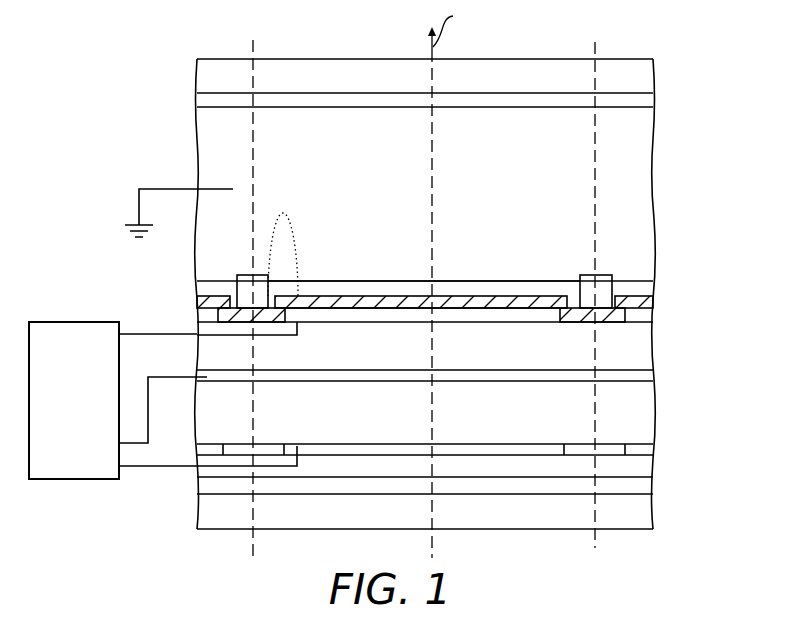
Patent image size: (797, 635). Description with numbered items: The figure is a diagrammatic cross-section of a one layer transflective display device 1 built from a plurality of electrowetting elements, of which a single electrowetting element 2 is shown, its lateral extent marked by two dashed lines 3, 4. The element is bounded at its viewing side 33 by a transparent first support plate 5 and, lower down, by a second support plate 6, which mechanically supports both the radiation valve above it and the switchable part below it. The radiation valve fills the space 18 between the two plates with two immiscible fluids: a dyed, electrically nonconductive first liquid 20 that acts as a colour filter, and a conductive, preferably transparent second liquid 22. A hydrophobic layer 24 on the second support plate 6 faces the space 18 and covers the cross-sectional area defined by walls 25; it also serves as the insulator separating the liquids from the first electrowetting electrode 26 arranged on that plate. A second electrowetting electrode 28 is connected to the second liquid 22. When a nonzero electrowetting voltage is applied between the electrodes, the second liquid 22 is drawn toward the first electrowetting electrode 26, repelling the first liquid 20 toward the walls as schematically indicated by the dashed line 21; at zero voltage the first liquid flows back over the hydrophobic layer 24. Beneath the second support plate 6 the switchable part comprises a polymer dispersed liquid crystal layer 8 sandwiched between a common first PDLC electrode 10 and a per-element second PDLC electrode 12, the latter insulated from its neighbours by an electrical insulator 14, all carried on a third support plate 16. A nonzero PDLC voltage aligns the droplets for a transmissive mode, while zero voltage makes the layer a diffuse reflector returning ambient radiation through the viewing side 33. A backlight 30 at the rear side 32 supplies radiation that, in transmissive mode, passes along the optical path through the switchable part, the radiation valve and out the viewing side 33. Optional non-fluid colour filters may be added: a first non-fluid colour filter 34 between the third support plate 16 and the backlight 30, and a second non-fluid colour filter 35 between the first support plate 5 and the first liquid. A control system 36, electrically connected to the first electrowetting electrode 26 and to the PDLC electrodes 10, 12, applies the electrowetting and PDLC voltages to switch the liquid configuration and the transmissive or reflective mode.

The transflective display device 1 is at (699, 40).
The electrowetting element 2 is at (365, 46).
The dashed line 3 is at (254, 42).
The dashed line 4 is at (597, 42).
The first support plate 5 is at (638, 76).
The second support plate 6 is at (640, 342).
The PDLC layer 8 is at (640, 413).
The first PDLC electrode 10 is at (640, 378).
The second PDLC electrode 12 is at (497, 446).
The electrical insulator 14 is at (582, 446).
The third support plate 16 is at (640, 466).
The space 18 is at (478, 122).
The first liquid 20 is at (562, 292).
The dashed line 21 is at (292, 222).
The second liquid 22 is at (640, 186).
The hydrophobic layer 24 is at (483, 300).
The walls 25 is at (240, 280).
The first electrowetting electrode 26 is at (528, 320).
The second electrowetting electrode 28 is at (138, 200).
The backlight 30 is at (640, 510).
The rear side 32 is at (518, 529).
The viewing side 33 is at (530, 58).
The first non-fluid colour filter 34 is at (200, 492).
The second non-fluid colour filter 35 is at (207, 102).
The control system 36 is at (118, 400).